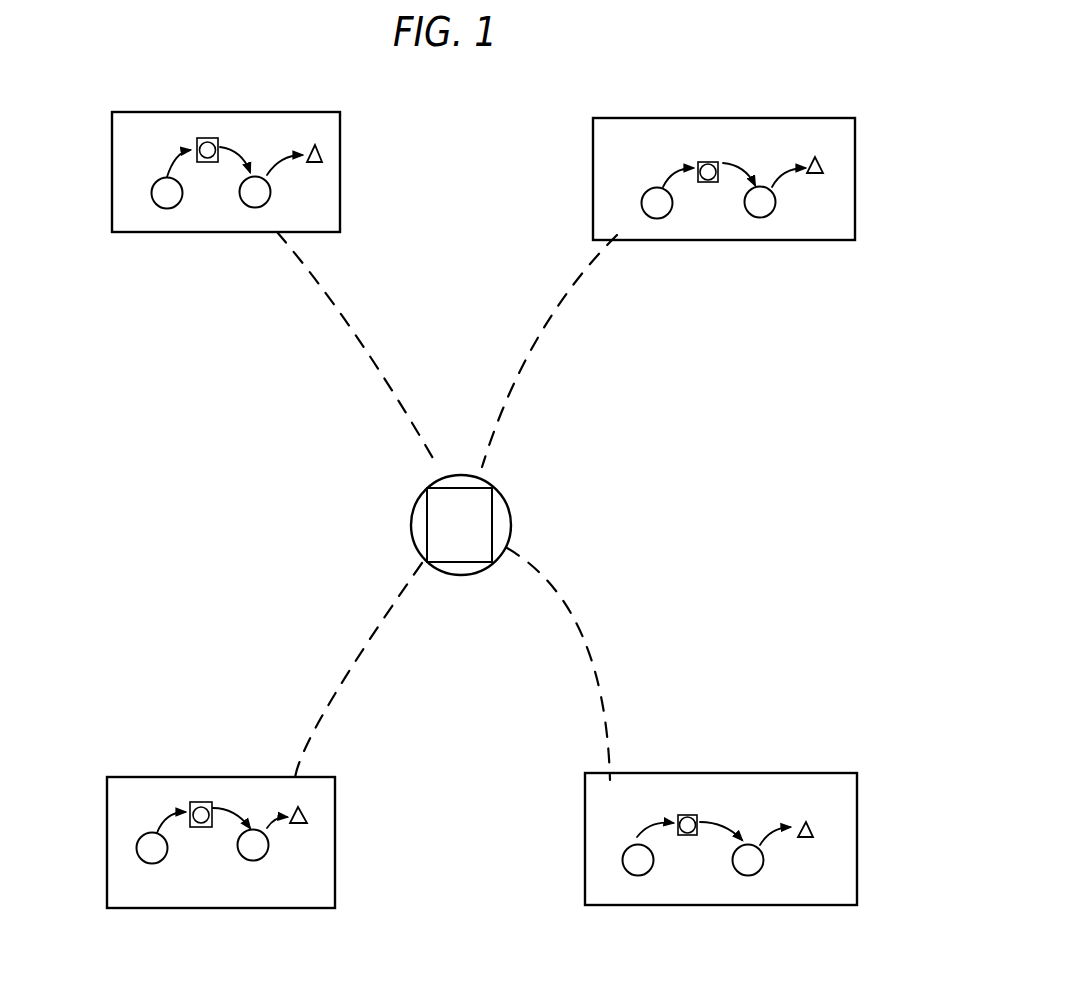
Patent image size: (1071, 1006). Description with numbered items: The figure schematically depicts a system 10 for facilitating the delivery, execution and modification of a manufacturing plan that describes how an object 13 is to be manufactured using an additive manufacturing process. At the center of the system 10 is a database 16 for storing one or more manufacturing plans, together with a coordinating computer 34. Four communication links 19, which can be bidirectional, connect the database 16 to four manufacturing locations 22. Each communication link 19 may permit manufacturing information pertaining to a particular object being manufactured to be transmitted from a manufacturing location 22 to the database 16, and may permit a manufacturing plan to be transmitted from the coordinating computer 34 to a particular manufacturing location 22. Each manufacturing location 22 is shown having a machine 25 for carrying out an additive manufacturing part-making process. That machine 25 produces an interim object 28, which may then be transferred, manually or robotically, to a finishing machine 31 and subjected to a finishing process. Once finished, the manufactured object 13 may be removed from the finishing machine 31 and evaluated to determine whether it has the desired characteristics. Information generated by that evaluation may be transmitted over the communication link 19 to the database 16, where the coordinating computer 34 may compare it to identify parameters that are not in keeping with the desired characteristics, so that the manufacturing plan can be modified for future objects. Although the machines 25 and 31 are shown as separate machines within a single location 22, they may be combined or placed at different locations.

The system 10 is at (793, 412).
The object 13 is at (321, 149).
The database 16 is at (488, 524).
The communication link 19 is at (372, 358).
The manufacturing location 22 is at (133, 234).
The machine 25 is at (152, 188).
The interim object 28 is at (206, 138).
The finishing machine 31 is at (253, 208).
The coordinating computer 34 is at (410, 520).